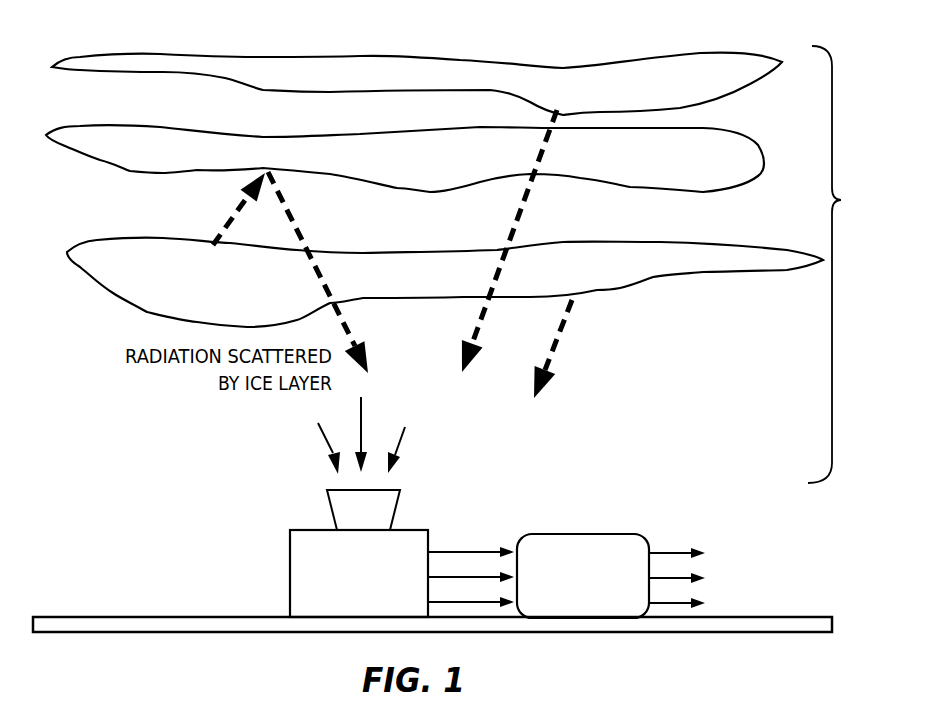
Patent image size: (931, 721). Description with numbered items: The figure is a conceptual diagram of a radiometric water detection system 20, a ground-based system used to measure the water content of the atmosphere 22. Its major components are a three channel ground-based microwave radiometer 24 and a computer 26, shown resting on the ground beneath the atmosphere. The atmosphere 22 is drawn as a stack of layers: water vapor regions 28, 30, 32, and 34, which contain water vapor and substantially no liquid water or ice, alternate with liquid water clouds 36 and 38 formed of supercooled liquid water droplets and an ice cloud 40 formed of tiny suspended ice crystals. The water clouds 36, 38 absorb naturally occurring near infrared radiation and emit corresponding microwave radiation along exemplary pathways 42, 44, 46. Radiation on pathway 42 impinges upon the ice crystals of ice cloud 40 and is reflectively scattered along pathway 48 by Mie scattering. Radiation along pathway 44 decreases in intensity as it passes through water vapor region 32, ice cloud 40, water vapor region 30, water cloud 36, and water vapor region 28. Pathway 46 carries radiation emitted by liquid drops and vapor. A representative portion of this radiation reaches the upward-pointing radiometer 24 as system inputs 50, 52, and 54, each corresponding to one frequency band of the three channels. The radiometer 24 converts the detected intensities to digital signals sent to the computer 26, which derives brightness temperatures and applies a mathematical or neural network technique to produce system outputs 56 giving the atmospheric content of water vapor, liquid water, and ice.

The radiometric water detection system 20 is at (255, 529).
The atmosphere 22 is at (840, 264).
The three channel ground-based microwave radiometer 24 is at (417, 529).
The computer 26 is at (610, 532).
The water vapor region 28 is at (414, 325).
The water vapor region 30 is at (459, 226).
The water vapor region 32 is at (446, 114).
The water vapor region 34 is at (442, 27).
The liquid water cloud 36 is at (669, 241).
The liquid water cloud 38 is at (591, 63).
The ice cloud 40 is at (237, 133).
The pathway 42 is at (217, 227).
The pathway 44 is at (523, 218).
The pathway 46 is at (563, 337).
The pathway 48 is at (300, 222).
The system input 50 is at (320, 442).
The system input 52 is at (361, 420).
The system input 54 is at (402, 440).
The system outputs 56 is at (735, 528).